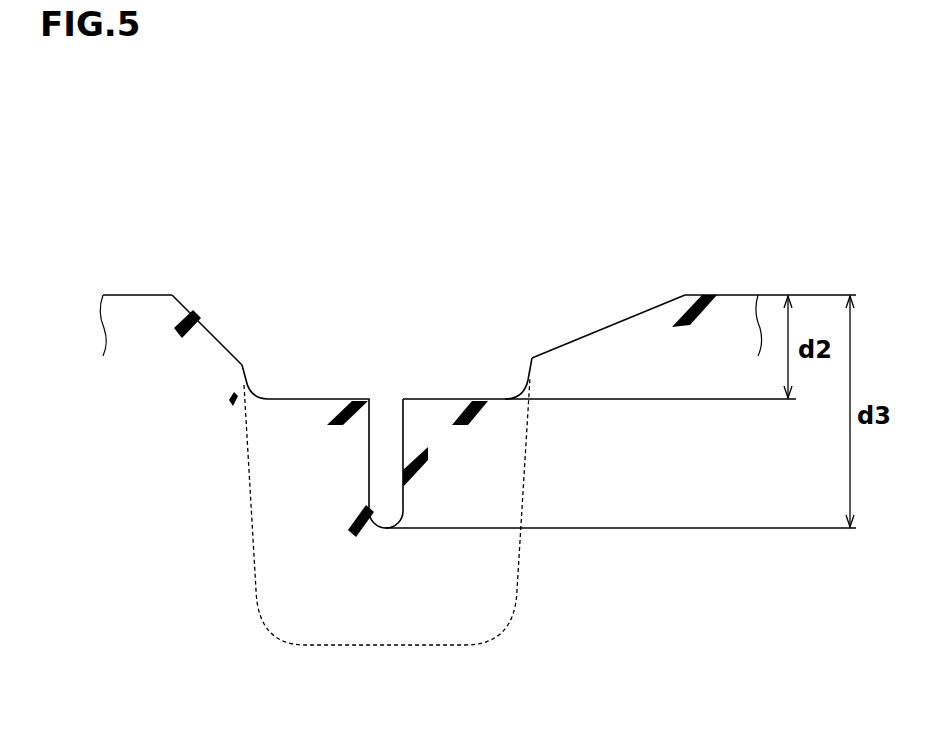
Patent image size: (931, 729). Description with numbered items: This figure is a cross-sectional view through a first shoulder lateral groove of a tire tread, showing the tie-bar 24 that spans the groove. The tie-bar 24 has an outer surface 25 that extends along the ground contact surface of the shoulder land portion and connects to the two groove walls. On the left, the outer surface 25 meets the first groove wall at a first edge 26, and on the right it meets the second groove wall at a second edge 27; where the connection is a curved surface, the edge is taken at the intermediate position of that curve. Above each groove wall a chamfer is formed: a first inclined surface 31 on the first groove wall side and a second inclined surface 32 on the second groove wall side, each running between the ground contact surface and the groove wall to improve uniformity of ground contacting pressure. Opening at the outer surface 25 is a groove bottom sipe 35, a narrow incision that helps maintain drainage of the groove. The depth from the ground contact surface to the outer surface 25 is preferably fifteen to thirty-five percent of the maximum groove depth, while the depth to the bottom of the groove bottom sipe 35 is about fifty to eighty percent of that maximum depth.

The tie-bar 24 is at (352, 388).
The outer surface 25 is at (440, 398).
The first edge 26 is at (270, 396).
The second edge 27 is at (520, 390).
The first inclined surface 31 is at (257, 390).
The second inclined surface 32 is at (608, 322).
The groove bottom sipe 35 is at (385, 459).